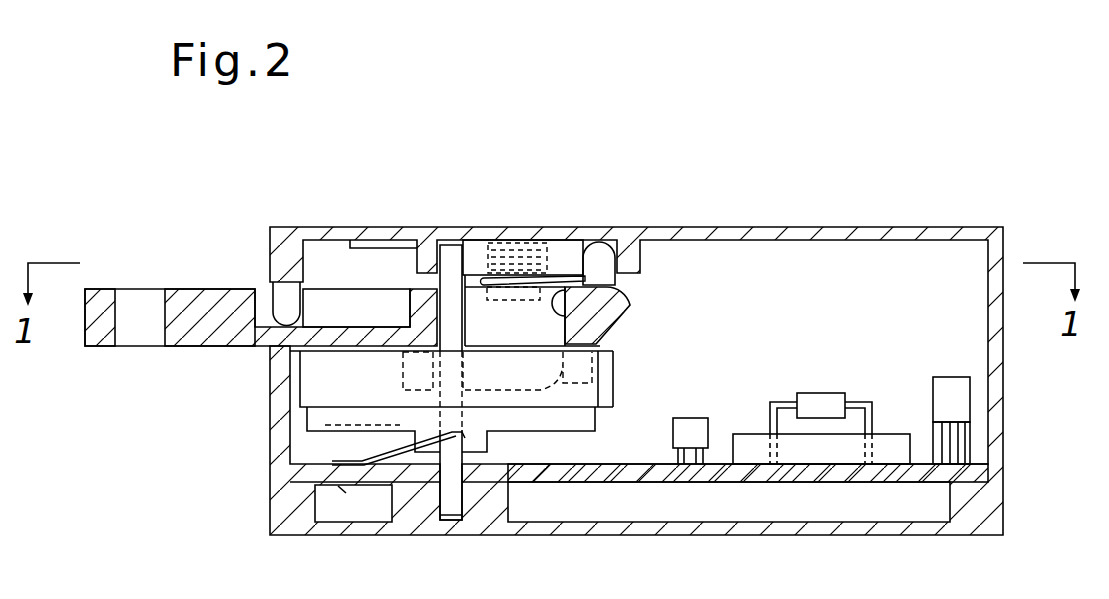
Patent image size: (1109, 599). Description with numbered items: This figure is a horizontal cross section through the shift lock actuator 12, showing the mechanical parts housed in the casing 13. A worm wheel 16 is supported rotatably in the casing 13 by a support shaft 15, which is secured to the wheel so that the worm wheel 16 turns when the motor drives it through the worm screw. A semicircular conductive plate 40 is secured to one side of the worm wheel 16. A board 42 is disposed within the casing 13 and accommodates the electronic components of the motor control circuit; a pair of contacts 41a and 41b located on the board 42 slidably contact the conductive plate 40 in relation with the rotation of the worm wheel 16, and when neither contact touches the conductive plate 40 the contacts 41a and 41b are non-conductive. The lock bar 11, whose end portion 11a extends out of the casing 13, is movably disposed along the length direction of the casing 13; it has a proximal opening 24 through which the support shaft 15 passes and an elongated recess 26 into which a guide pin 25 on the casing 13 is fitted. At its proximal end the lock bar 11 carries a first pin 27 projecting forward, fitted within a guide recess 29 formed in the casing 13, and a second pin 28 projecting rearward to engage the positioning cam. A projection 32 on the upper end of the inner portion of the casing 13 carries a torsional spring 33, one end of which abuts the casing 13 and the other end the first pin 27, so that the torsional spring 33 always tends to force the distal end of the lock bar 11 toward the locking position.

The lock bar 11 is at (261, 347).
The end portion of arm 11a is at (116, 335).
The shift lock actuator 12 is at (544, 371).
The casing 13 is at (893, 228).
The support shaft 15 is at (450, 246).
The worm wheel 16 is at (310, 375).
The proximal opening 24 is at (598, 303).
The guide pin 25 is at (279, 298).
The elongated recess 26 is at (334, 300).
The first pin 27 is at (602, 246).
The second pin 28 is at (546, 393).
The guide recess 29 is at (572, 250).
The projection 32 is at (490, 300).
The torsional spring 33 is at (516, 242).
The semicircular conductive plate 40 is at (352, 424).
The contact 41a is at (400, 458).
The contact 41b is at (369, 542).
The board 42 is at (597, 483).